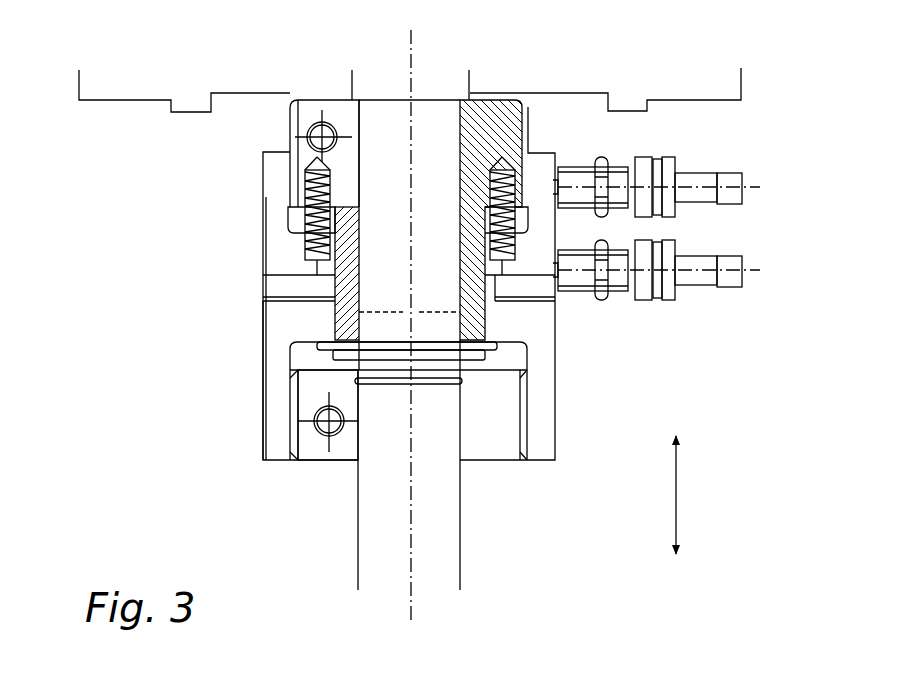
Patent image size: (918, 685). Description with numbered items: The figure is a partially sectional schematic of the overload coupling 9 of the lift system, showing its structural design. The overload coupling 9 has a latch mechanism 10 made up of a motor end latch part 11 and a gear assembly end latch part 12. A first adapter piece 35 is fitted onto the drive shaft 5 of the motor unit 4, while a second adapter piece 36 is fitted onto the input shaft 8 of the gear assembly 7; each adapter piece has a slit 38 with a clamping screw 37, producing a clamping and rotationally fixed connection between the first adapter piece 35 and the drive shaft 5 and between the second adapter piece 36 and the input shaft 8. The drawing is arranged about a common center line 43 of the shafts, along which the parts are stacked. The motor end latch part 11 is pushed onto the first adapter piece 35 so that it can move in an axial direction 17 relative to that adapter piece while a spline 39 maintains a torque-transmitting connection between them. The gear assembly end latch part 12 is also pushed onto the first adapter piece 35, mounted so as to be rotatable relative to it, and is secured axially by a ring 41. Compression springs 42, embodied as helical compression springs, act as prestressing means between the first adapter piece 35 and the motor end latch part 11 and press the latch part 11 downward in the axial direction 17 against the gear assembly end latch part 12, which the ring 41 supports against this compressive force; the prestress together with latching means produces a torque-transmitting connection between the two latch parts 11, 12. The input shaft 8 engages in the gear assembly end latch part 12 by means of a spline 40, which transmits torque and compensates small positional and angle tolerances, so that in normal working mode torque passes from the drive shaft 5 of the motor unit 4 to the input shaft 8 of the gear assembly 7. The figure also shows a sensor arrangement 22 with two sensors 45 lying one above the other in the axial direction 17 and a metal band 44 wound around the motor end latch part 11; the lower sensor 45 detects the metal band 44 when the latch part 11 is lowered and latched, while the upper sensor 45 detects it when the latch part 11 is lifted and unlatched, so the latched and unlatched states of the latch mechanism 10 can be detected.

The motor unit 4 is at (589, 40).
The drive shaft 5 is at (390, 215).
The gear assembly 7 is at (526, 582).
The input shaft 8 is at (441, 532).
The overload coupling 9 is at (176, 262).
The latch mechanism 10 is at (233, 308).
The motor end latch part 11 is at (275, 175).
The gear assembly end latch part 12 is at (277, 363).
The axial direction 17 is at (676, 493).
The sensor arrangement 22 is at (742, 231).
The first adapter piece 35 is at (497, 118).
The second adapter piece 36 is at (498, 432).
The clamping screw 37 is at (314, 128).
The slit 38 is at (340, 115).
The spline 39 is at (528, 135).
The spline 40 is at (525, 403).
The ring 41 is at (527, 350).
The compression springs 42 is at (297, 222).
The axis 43 is at (412, 58).
The metal band 44 is at (553, 235).
The sensors 45 is at (700, 183).